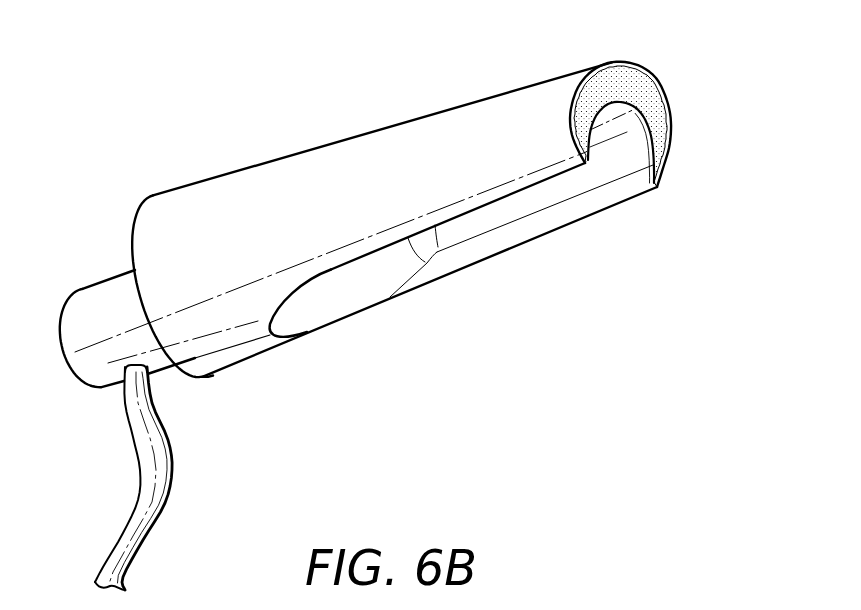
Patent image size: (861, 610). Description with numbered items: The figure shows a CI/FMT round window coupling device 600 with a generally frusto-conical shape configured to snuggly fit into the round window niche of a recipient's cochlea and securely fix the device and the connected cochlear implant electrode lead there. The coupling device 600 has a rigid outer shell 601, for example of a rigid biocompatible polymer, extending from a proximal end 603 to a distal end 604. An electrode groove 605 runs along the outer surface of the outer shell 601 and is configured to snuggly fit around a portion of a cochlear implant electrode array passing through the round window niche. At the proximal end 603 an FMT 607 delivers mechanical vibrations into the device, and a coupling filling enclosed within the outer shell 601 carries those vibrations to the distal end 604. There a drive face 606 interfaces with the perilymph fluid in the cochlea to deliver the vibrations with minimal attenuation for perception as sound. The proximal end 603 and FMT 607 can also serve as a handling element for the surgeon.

The coupling device 600 is at (270, 105).
The rigid outer shell 601 is at (397, 150).
The proximal end 603 is at (164, 203).
The distal end 604 is at (665, 180).
The electrode groove 605 is at (627, 127).
The drive face 606 is at (631, 84).
The FMT 607 is at (93, 296).